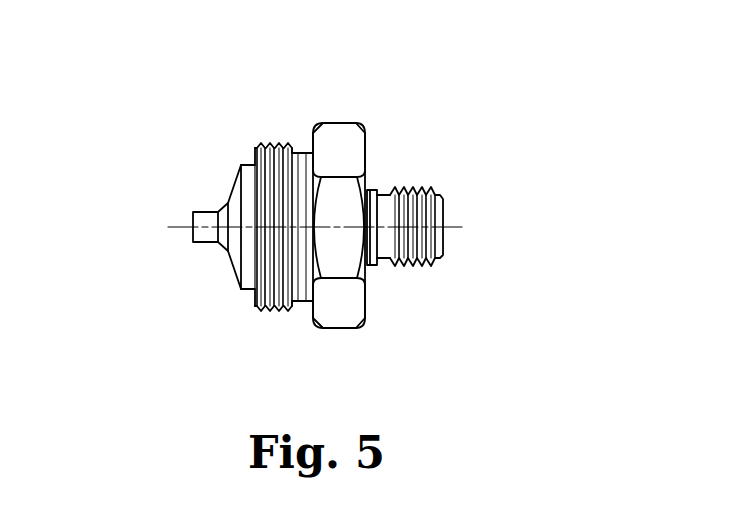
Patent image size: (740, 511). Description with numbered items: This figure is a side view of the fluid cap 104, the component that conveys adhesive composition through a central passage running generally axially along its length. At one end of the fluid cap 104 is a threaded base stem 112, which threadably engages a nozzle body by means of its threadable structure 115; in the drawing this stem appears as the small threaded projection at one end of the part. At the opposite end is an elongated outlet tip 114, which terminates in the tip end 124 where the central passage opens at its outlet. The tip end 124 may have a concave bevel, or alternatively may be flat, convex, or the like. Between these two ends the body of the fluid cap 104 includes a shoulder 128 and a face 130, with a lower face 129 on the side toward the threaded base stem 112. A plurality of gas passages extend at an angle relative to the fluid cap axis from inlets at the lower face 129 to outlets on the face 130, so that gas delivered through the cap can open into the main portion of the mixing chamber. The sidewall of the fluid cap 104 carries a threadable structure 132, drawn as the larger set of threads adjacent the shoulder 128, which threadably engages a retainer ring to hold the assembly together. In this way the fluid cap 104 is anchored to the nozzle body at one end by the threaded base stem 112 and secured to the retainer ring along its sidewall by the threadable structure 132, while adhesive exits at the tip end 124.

The fluid cap 104 is at (217, 84).
The threaded base stem 112 is at (392, 188).
The elongated outlet tip 114 is at (203, 250).
The threadable structure 115 is at (415, 267).
The tip end 124 is at (191, 212).
The shoulder 128 is at (253, 290).
The lower face 129 is at (370, 148).
The face 130 is at (228, 262).
The threadable structure 132 is at (277, 311).